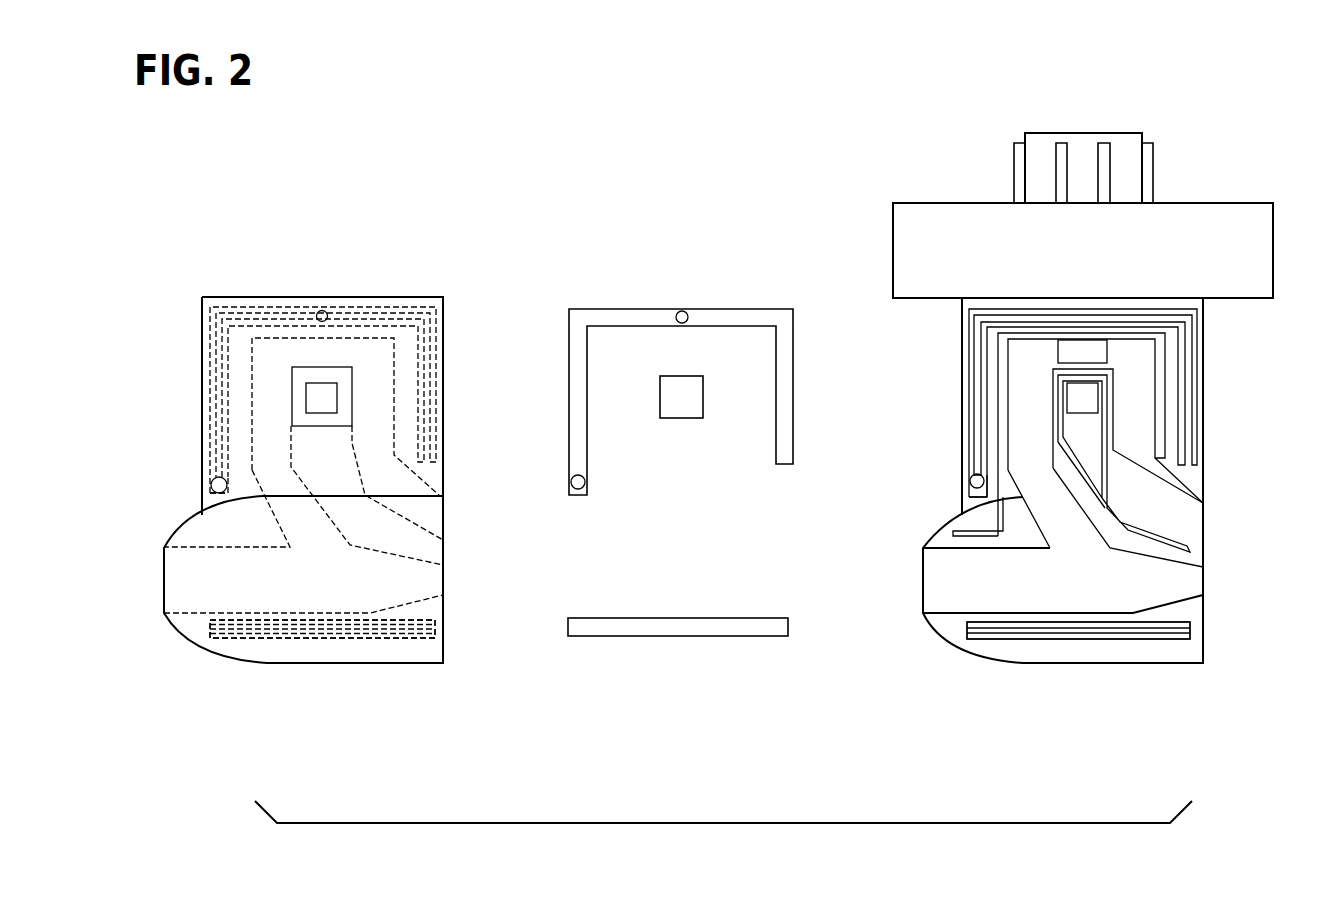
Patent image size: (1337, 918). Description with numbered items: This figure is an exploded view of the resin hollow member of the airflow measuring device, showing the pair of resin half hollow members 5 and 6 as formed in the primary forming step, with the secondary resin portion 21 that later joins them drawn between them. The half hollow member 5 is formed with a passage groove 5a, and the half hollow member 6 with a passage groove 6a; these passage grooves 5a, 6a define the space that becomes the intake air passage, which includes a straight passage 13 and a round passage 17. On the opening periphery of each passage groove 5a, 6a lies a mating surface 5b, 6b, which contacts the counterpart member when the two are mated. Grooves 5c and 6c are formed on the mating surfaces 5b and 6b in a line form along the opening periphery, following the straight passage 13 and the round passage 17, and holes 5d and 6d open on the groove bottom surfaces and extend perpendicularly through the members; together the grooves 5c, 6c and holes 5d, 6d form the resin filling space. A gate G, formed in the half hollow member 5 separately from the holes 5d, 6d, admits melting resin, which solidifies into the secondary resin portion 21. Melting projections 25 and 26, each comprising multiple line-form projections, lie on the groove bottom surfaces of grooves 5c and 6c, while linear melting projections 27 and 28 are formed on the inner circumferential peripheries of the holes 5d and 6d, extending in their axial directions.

The half hollow member 5 is at (368, 663).
The passage groove 5a is at (376, 391).
The mating surface 5b is at (207, 403).
The groove 5c is at (213, 355).
The hole 5d is at (213, 478).
The gate G is at (320, 310).
The melting projection 25 is at (433, 328).
The melting projections 27 is at (211, 487).
The straight passage 13 is at (700, 541).
The secondary resin portion 21 is at (710, 309).
The half hollow member 6 is at (1148, 663).
The passage groove 6a is at (1168, 549).
The mating surface 6b is at (962, 427).
The groove 6c is at (972, 387).
The hole 6d is at (970, 480).
The melting projection 26 is at (1188, 362).
The melting projections 28 is at (970, 492).
The round passage 17 is at (1175, 468).